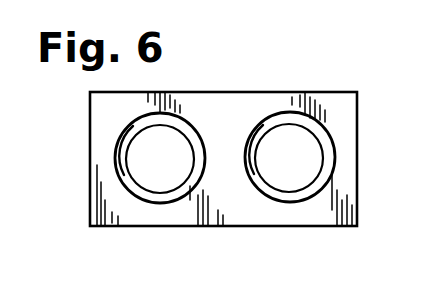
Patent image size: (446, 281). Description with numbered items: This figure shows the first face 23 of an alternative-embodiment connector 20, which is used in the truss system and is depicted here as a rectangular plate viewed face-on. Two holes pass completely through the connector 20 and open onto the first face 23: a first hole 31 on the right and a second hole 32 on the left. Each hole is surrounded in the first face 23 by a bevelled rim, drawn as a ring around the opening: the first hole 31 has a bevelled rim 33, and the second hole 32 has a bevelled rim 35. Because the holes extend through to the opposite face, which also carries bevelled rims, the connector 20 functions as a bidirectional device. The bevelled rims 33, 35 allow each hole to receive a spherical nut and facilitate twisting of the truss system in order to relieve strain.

The connector 20 is at (208, 92).
The first face 23 is at (242, 112).
The bevelled rim 35 is at (120, 137).
The bevelled rim 33 is at (332, 158).
The second hole 32 is at (178, 173).
The first hole 31 is at (301, 173).